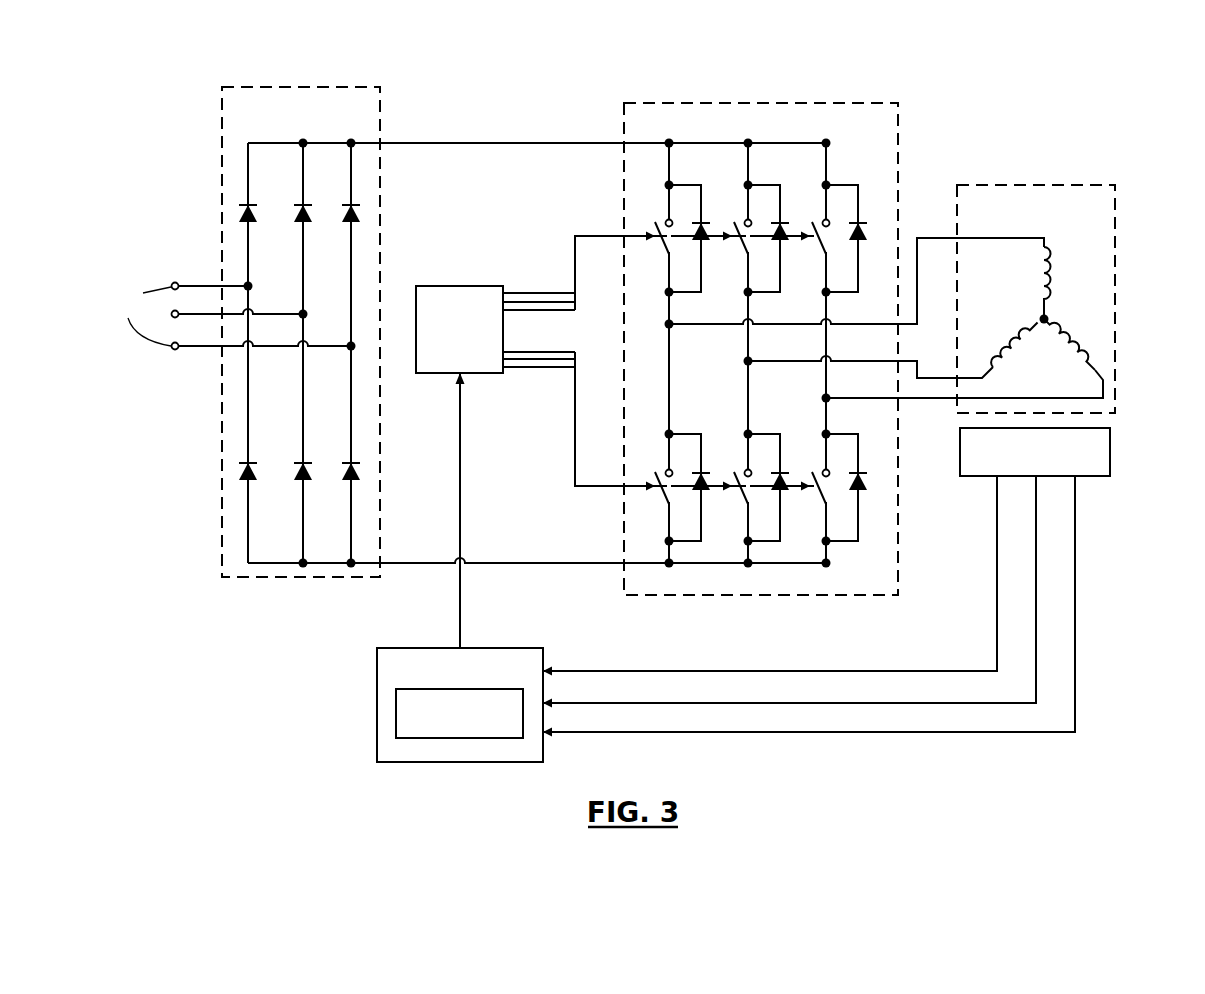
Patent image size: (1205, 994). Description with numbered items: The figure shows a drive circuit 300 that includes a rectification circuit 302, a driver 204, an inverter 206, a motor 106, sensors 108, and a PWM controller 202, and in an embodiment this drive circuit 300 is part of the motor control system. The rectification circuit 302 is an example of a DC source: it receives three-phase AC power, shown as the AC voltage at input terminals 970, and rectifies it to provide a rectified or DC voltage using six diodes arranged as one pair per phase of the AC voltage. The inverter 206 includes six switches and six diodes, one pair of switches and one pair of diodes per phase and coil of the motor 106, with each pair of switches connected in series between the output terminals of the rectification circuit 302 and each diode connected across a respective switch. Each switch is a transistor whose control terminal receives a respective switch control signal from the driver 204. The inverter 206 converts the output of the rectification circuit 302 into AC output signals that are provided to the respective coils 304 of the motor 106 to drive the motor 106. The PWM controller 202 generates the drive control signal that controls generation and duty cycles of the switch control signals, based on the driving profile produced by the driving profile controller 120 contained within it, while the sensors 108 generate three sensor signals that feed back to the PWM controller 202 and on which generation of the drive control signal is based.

The drive circuit 300 is at (978, 62).
The rectification circuit 302 is at (222, 96).
The AC input terminals 970 is at (171, 314).
The driver 204 is at (459, 286).
The inverter 206 is at (624, 104).
The motor 106 is at (1060, 185).
The coils 304 is at (1044, 277).
The sensors 108 is at (1110, 452).
The PWM controller 202 is at (410, 648).
The driving profile controller 120 is at (396, 716).